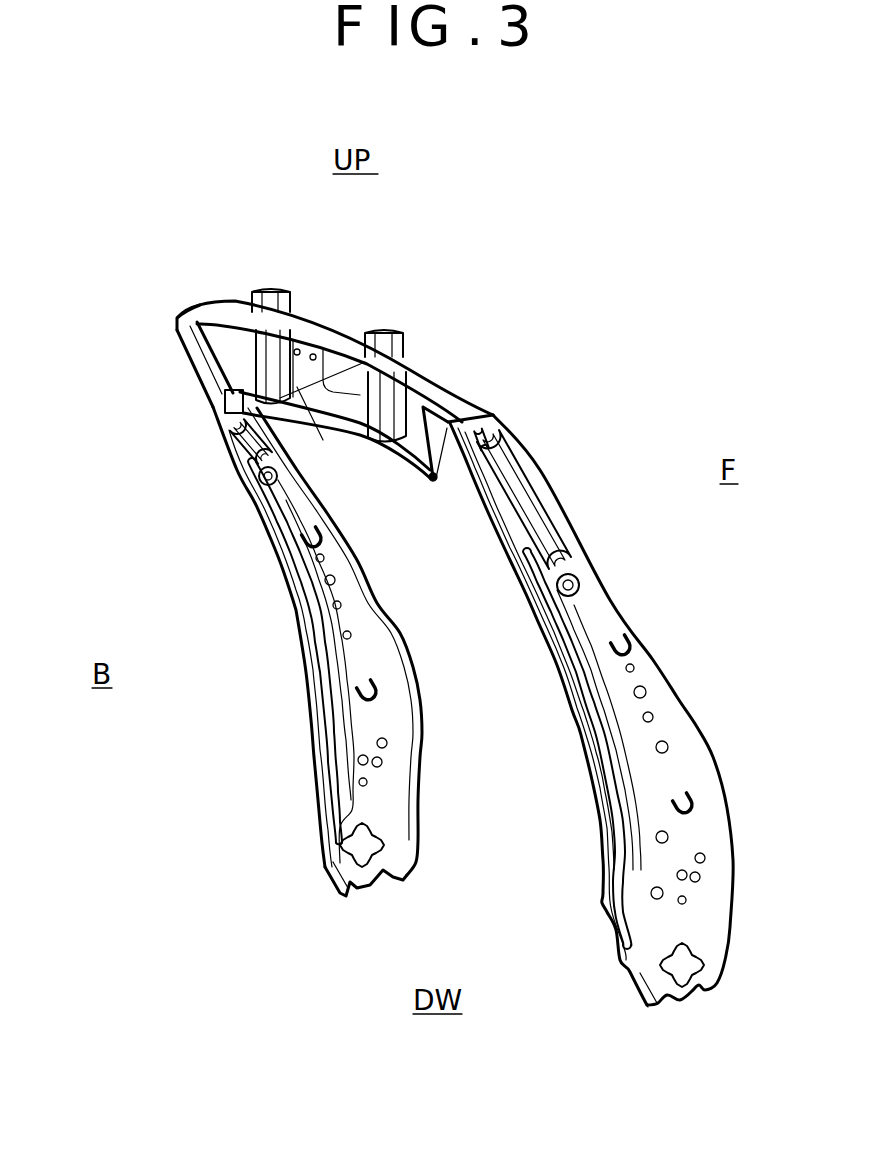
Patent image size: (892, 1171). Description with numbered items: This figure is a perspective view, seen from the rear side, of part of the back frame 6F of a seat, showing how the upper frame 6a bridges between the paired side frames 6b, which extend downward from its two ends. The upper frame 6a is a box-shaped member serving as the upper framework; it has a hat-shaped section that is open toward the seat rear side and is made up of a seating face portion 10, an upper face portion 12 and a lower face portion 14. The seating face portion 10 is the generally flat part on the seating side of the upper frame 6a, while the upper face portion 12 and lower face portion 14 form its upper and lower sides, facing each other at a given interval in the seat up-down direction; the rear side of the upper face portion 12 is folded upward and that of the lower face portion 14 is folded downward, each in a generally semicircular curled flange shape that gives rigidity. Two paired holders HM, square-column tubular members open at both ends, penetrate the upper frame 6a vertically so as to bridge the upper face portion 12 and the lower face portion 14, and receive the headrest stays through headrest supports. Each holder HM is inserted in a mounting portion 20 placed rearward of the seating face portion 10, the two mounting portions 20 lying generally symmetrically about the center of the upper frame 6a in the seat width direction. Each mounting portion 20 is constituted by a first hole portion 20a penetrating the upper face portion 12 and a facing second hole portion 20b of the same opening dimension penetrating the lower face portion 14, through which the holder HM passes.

The vehicle body frame 6F is at (456, 648).
The upper frame 6a is at (557, 350).
The side frames 6b is at (630, 622).
The seating face portion 10 is at (416, 395).
The upper face portion 12 is at (452, 398).
The lower face portion 14 is at (470, 421).
The holders HM is at (272, 290).
The mounting portions 20 is at (173, 233).
The first hole portion 20a is at (250, 299).
The second hole portion 20b is at (177, 337).